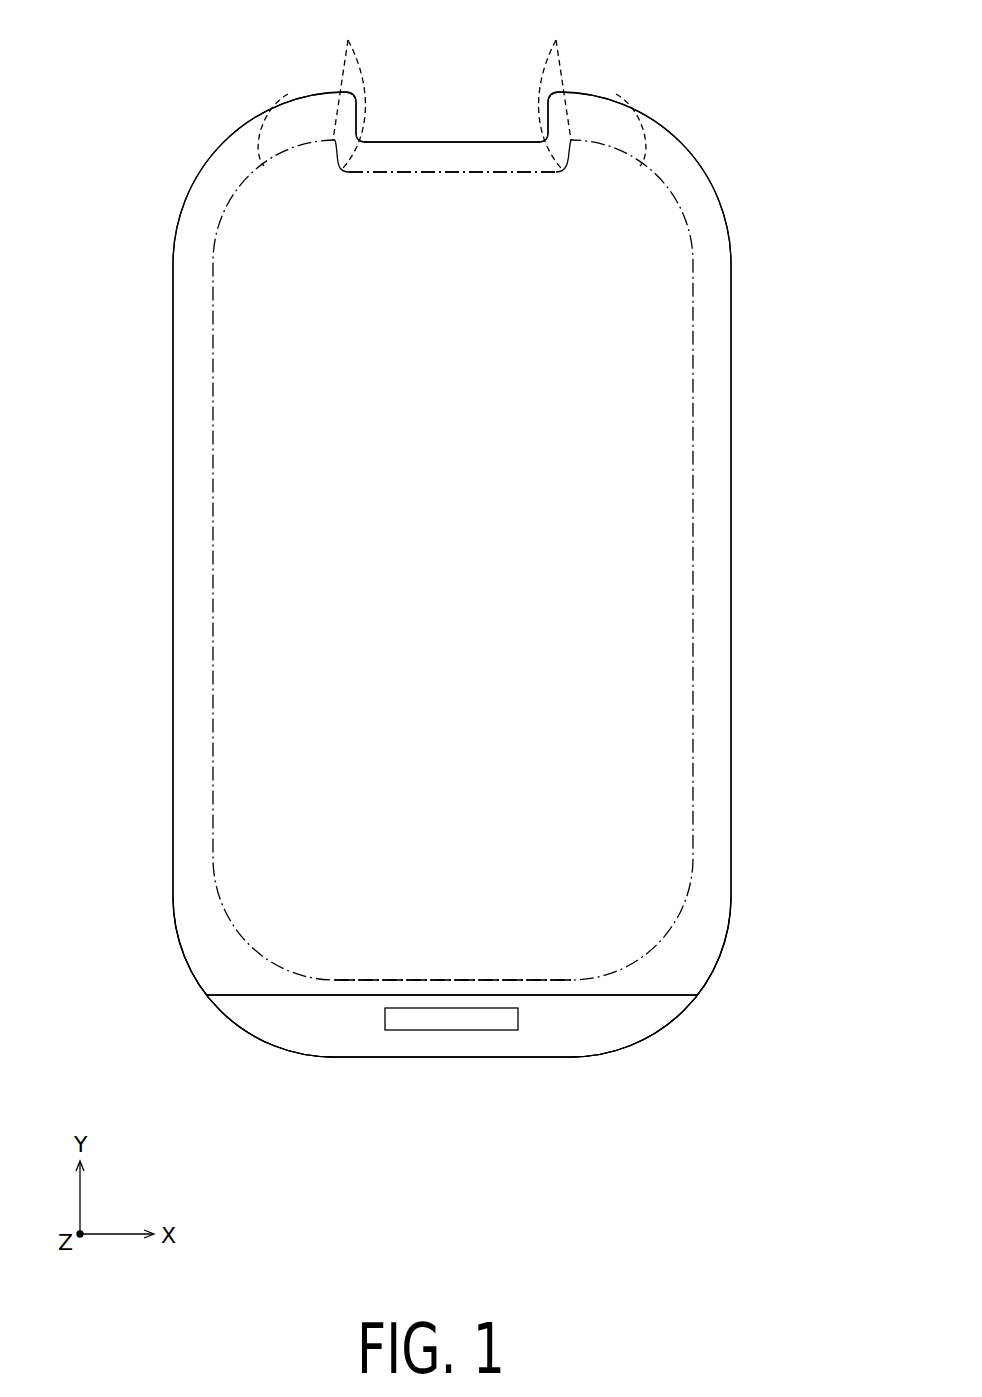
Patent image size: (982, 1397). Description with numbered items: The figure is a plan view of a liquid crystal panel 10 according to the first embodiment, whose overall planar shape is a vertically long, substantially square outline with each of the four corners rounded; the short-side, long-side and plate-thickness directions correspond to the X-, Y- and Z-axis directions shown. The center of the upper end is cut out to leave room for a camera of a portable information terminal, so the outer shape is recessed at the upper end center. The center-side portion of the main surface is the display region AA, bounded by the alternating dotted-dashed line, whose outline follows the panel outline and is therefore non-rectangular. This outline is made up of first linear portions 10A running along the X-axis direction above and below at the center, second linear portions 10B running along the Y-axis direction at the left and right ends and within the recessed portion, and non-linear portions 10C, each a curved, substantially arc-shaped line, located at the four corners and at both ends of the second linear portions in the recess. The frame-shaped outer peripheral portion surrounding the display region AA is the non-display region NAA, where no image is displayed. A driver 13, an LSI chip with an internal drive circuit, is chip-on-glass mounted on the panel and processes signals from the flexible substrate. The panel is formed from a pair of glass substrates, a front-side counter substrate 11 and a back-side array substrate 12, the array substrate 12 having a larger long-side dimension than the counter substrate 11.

The liquid crystal panel 10 is at (168, 28).
The first linear portion 10A is at (455, 172).
The second linear portion 10B is at (213, 551).
The non-linear portion 10C is at (288, 94).
The counter substrate 11 is at (257, 997).
The array substrate 12 is at (277, 1047).
The driver 13 is at (452, 1020).
The display region AA is at (600, 437).
The non-display region NAA is at (612, 1025).